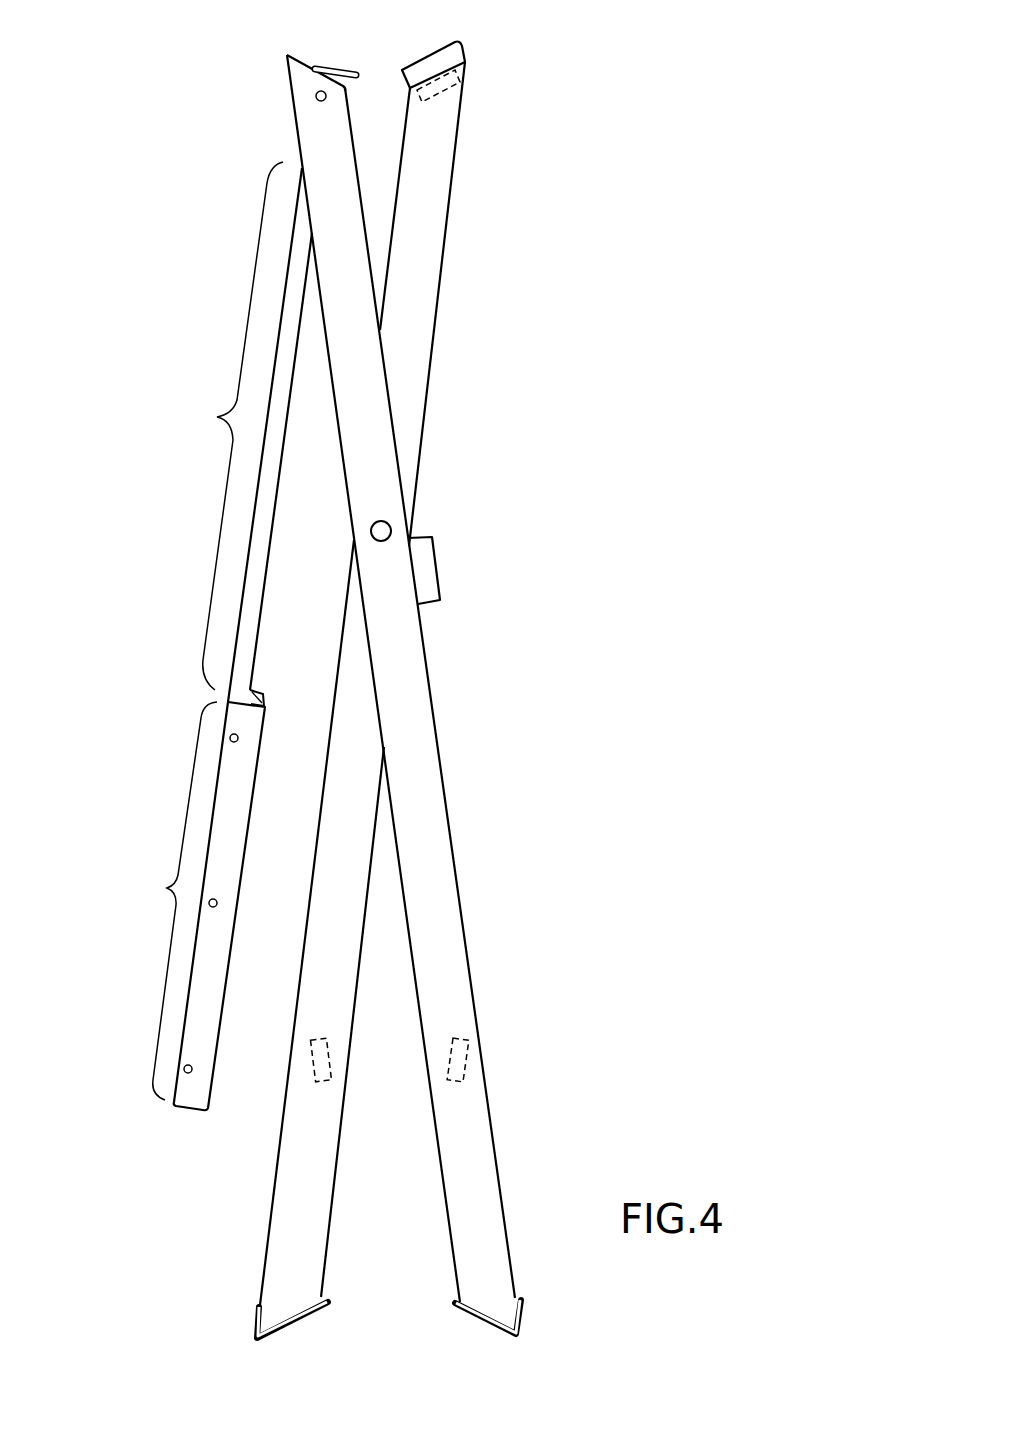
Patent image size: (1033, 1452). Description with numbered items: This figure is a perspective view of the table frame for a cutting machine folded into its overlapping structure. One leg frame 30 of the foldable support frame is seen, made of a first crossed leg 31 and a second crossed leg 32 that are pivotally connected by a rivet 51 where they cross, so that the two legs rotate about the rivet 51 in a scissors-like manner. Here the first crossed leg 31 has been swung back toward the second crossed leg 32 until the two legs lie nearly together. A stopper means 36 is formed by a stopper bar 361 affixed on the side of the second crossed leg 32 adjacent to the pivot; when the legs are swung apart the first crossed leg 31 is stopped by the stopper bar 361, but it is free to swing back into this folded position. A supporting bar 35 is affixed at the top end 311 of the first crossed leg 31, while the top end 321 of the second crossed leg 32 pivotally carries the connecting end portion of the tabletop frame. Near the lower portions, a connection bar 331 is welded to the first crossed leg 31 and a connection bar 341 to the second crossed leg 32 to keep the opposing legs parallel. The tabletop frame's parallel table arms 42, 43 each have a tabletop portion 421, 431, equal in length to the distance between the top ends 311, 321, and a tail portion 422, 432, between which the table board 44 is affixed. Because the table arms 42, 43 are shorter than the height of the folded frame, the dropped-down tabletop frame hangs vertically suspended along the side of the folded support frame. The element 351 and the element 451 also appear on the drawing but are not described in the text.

The leg frame 30 is at (373, 1226).
The first crossed leg 31 is at (374, 679).
The second crossed leg 32 is at (452, 675).
The top end of first crossed leg 311 is at (447, 105).
The top end of second crossed leg 321 is at (297, 75).
The supporting bar 35 is at (442, 83).
The bent top flange 351 is at (450, 53).
The stopper means 36 is at (567, 512).
The stopper bar 361 is at (413, 543).
The rivet 51 is at (383, 533).
The table arm 42 is at (273, 450).
The table arm 43 is at (284, 435).
The tabletop portion 421 is at (208, 426).
The tabletop portion 431 is at (208, 426).
The tail portion 422 is at (175, 906).
The tail portion 432 is at (175, 906).
The table board 44 is at (256, 698).
The pivot pin 451 is at (327, 72).
The connection bar 331 is at (318, 1082).
The connection bar 341 is at (457, 1062).